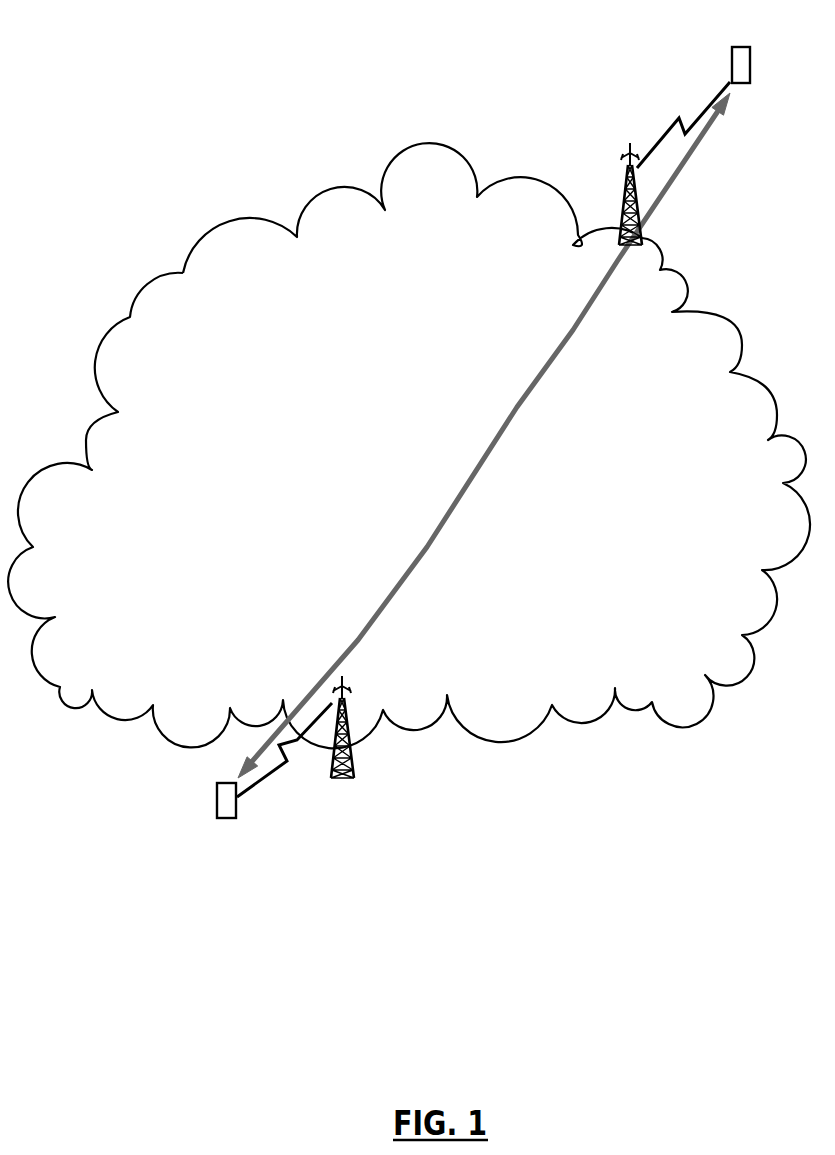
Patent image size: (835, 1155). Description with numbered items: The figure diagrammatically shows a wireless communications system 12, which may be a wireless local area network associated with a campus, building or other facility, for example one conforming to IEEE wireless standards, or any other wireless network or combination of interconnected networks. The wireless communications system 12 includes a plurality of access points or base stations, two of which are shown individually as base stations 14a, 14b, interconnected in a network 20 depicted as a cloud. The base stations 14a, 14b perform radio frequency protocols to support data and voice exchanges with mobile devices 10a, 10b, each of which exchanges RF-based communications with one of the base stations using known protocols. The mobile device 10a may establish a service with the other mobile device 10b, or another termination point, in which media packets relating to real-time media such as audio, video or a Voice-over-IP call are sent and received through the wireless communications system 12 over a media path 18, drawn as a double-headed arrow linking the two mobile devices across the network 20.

The wireless communications system 12 is at (394, 54).
The network 20 is at (200, 237).
The media path 18 is at (518, 406).
The base station 14a is at (622, 218).
The base station 14b is at (347, 718).
The mobile device 10a is at (728, 72).
The mobile device 10b is at (217, 792).